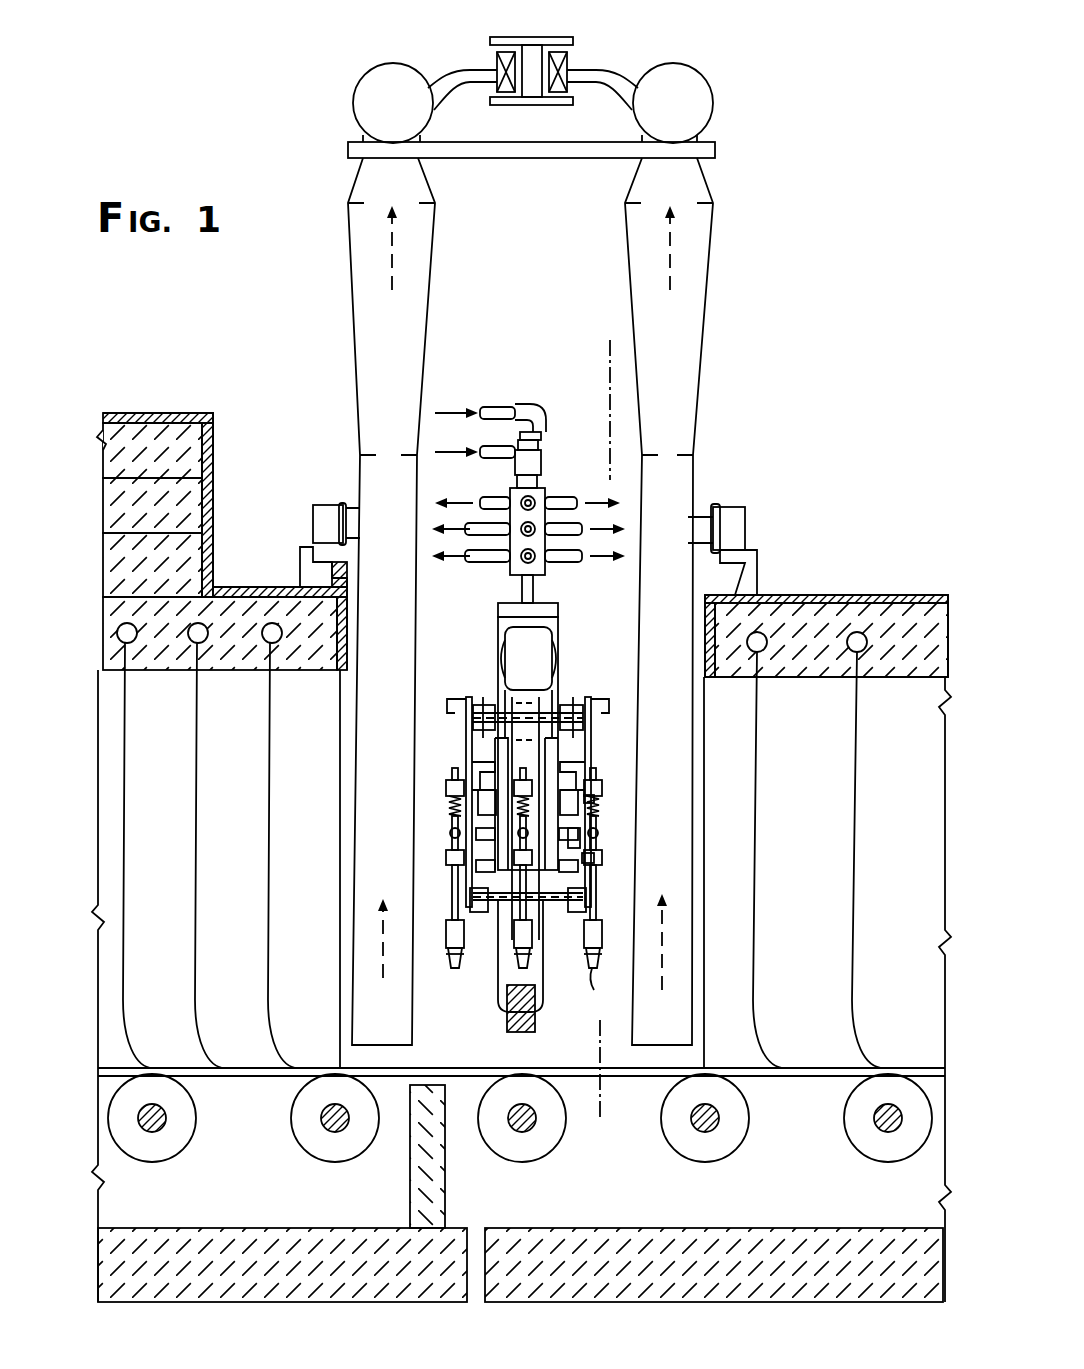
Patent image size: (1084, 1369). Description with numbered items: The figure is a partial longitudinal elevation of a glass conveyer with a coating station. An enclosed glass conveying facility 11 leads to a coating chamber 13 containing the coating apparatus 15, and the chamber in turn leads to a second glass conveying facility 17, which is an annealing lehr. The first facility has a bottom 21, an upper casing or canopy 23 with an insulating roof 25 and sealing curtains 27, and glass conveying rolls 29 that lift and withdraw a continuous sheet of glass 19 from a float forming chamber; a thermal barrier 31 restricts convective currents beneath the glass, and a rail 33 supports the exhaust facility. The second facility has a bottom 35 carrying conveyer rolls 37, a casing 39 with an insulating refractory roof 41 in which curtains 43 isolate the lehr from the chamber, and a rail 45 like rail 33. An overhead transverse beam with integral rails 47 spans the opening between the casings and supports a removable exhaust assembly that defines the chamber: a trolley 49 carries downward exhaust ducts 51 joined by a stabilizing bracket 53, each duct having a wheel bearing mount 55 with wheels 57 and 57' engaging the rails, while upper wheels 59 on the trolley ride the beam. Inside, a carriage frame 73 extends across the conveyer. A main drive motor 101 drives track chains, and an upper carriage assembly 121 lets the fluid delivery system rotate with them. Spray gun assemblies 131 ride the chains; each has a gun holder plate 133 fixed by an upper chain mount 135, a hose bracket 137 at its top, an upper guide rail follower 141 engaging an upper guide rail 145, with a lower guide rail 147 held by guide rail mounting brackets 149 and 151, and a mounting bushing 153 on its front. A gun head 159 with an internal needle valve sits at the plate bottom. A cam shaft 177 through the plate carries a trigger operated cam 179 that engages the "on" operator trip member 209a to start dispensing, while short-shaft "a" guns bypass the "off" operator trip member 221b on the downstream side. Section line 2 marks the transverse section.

The section line 2- 2 is at (582, 358).
The enclosed glass conveying facility 11 is at (519, 825).
The coating chamber 13 is at (476, 94).
The coating apparatus 15 is at (526, 685).
The second glass conveying facility 17 is at (818, 713).
The continuous sheet of glass 19 is at (234, 1077).
The bottom 21 is at (270, 1298).
The upper casing or canopy 23 is at (152, 405).
The insulating roof 25 is at (167, 674).
The sealing curtains 27 is at (197, 858).
The glass conveying rolls 29 is at (172, 1140).
The thermal barrier 31 is at (410, 1180).
The rail 33 is at (300, 566).
The bottom 35 is at (686, 1298).
The conveyer rolls 37 is at (550, 1147).
The casing 39 is at (890, 597).
The insulating refractory ceiling or roof 41 is at (879, 678).
The curtains 43 is at (853, 760).
The rail 45 is at (760, 563).
The overhead transverse structural beam with integral rails 47 is at (530, 40).
The trolley 49 is at (475, 75).
The exhaust ducts 51 is at (705, 300).
The stabilizing bracket 53 is at (512, 150).
The wheel bearing mount 55 is at (704, 510).
The wheel 57 is at (314, 509).
The wheel 57' is at (757, 518).
The upper wheels 59 is at (572, 62).
The coating apparatus carriage frame 73 is at (510, 1018).
The main drive motor 101 is at (546, 640).
The upper carriage assembly 121 is at (556, 614).
The spray gun assemblies 131 is at (596, 668).
The gun holder plate 133 is at (466, 738).
The upper chain mount 135 is at (576, 697).
The hose bracket 137 is at (460, 697).
The upper guide rail follower 141 is at (462, 772).
The upper guide rail 145 is at (584, 752).
The lower guide rail 147 is at (588, 880).
The guide rail mounting bracket 149 is at (604, 800).
The guide rail mounting bracket 151 is at (598, 863).
The mounting bushing 153 is at (602, 790).
The gun head 159 is at (600, 990).
The cam shaft 177 is at (462, 845).
The trigger operated cam 179 is at (450, 832).
The "on" operator trip member 209a is at (452, 818).
The "off" operator trip member 221b is at (600, 843).